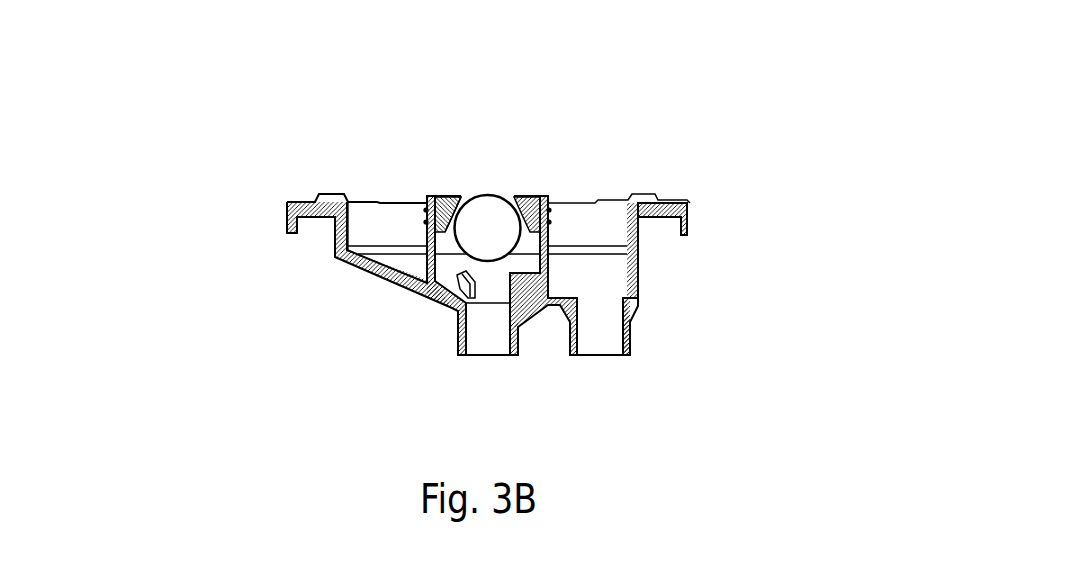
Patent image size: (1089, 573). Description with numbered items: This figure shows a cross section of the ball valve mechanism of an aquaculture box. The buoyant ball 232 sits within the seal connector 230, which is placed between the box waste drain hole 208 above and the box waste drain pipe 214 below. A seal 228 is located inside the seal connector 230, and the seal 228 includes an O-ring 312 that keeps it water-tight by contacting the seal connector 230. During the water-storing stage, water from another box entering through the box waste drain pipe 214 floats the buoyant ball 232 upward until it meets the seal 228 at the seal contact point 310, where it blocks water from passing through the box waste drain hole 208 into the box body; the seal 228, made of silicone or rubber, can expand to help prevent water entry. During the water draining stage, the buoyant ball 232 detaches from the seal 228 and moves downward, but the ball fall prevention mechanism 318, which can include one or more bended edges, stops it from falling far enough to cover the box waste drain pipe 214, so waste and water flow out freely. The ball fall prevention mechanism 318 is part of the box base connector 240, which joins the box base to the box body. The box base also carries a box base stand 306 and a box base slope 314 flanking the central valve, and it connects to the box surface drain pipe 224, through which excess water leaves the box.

The box waste drain hole 208 is at (483, 196).
The seal contact point 310 is at (463, 196).
The seal connector 230 is at (625, 136).
The buoyant ball 232 is at (488, 210).
The seal 228 is at (522, 196).
The box base stand 306 is at (693, 199).
The O-ring 312 is at (424, 222).
The box base slope 314 is at (390, 280).
The box base connector 240 is at (455, 312).
The box waste drain pipe 214 is at (490, 337).
The ball fall prevention mechanism 318 is at (497, 290).
The box surface drain pipe 224 is at (598, 338).